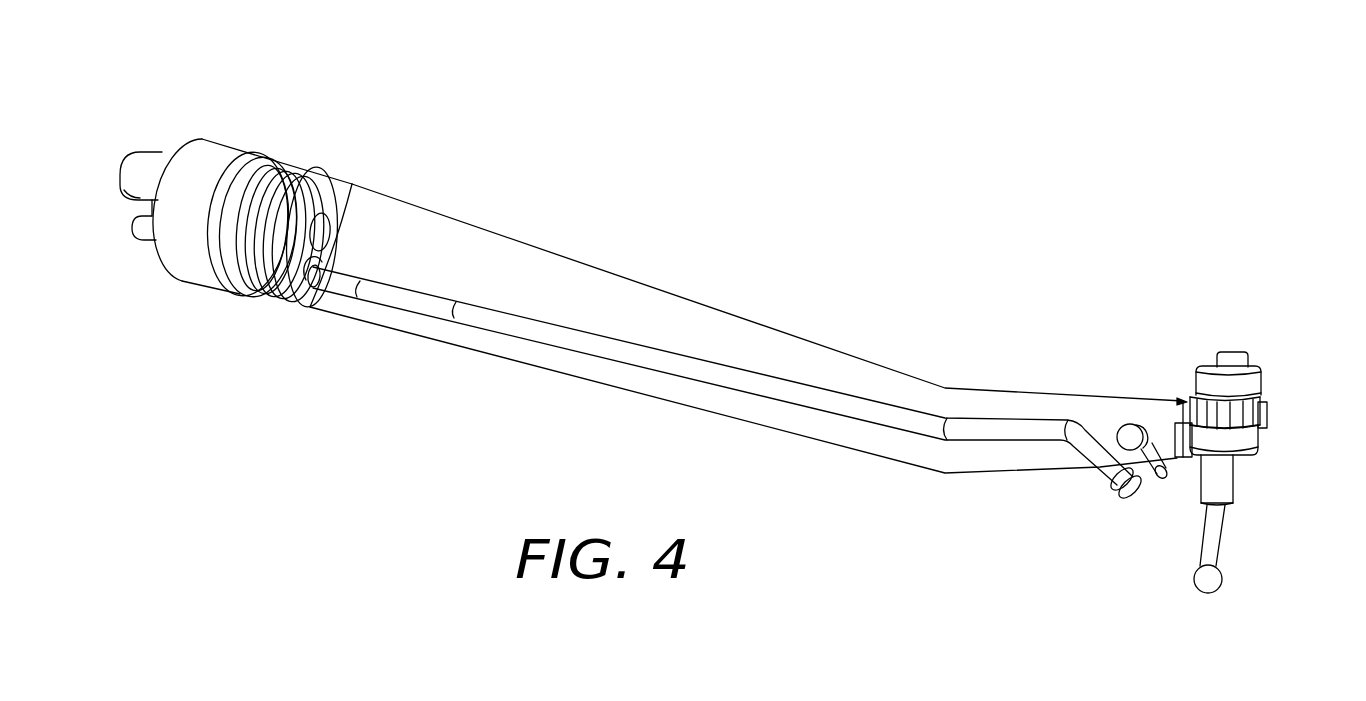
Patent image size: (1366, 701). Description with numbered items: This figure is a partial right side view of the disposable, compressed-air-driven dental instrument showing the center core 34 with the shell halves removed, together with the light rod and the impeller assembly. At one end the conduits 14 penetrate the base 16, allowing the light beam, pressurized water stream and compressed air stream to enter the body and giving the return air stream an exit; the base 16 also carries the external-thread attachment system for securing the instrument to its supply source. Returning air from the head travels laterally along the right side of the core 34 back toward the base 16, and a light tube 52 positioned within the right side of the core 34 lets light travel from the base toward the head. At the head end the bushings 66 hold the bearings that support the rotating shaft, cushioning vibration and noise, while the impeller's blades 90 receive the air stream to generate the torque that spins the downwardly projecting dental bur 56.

The conduits 14 is at (128, 132).
The base 16 is at (227, 131).
The core 34 is at (630, 305).
The light tube 52 is at (597, 345).
The bushings 66 is at (1250, 382).
The blades 90 is at (1253, 415).
The dental bur 56 is at (1232, 577).